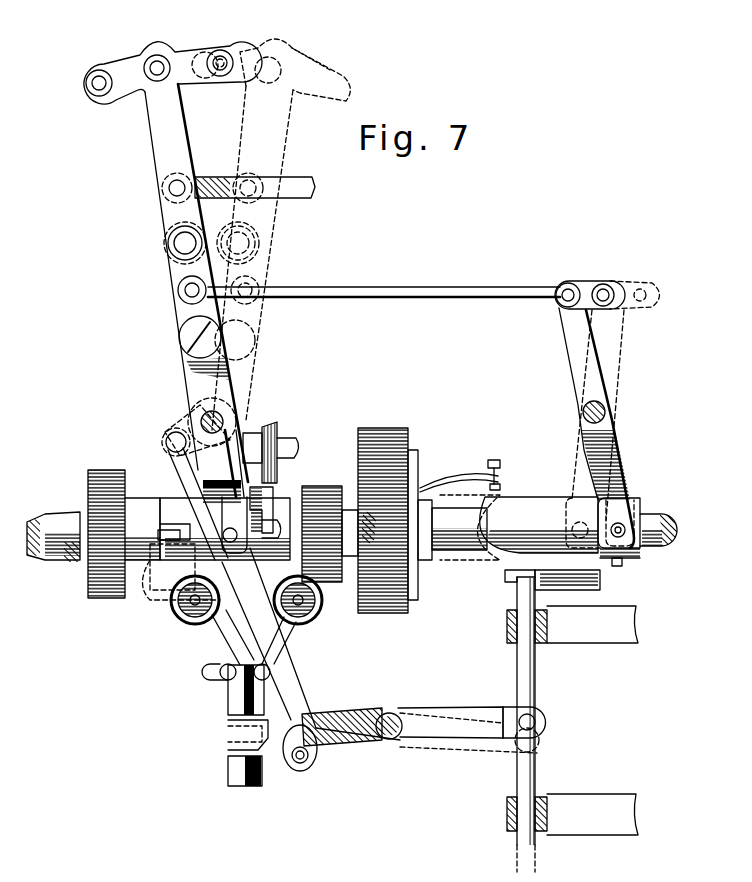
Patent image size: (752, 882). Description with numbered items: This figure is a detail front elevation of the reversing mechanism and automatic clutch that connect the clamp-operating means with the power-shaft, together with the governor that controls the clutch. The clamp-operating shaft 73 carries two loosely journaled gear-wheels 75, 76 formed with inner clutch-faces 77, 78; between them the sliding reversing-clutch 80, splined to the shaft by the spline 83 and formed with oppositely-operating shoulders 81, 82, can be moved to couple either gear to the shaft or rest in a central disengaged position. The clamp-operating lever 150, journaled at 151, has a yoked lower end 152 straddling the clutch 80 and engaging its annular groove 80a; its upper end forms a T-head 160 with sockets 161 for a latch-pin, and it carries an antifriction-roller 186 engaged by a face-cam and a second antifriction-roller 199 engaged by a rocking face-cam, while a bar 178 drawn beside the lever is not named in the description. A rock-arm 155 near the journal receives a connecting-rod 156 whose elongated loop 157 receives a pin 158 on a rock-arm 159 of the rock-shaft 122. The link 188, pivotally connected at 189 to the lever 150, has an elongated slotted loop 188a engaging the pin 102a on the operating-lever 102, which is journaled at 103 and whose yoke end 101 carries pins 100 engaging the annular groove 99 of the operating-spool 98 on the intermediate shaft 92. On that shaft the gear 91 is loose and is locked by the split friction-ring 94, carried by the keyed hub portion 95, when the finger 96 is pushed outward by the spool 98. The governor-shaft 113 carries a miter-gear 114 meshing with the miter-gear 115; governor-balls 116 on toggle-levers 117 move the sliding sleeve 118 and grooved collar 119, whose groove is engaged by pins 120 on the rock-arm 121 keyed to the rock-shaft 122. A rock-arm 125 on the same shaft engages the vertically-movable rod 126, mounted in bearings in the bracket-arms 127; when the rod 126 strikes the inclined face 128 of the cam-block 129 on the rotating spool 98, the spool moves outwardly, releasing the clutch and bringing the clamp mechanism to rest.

The clamp-operating lever 150 is at (161, 116).
The T-head 160 is at (126, 70).
The sockets 161 is at (220, 58).
The bar 178 is at (218, 194).
The antifriction-roller 199 is at (168, 243).
The pivotal connection 189 is at (186, 290).
The antifriction-roller 186 is at (181, 342).
The link 188 is at (330, 294).
The pin 102a is at (571, 292).
The elongated slotted loop 188a is at (605, 292).
The operating-lever 102 is at (596, 384).
The journal 103 is at (606, 410).
The crank 101 is at (618, 492).
The pins 100 is at (640, 552).
The intermediate shaft 92 is at (650, 526).
The annular groove 99 is at (617, 566).
The operating-spool 98 is at (535, 510).
The finger 96 is at (452, 486).
The hub portion 95 is at (420, 560).
The split friction-ring 94 is at (414, 466).
The gear 91 is at (378, 444).
The clamp-operating shaft 73 is at (56, 550).
The gear-wheel 75 is at (99, 486).
The clutch-face 77 is at (145, 504).
The spline 83 is at (165, 512).
The shoulder 81 is at (168, 562).
The annular groove 80a is at (178, 590).
The sliding reversing-clutch 80 is at (276, 496).
The clutch-face 78 is at (270, 520).
The shoulder 82 is at (272, 540).
The gear-wheel 76 is at (318, 494).
The journal 151 is at (225, 426).
The rock-arm 155 is at (168, 442).
The yoked lower end 152 is at (248, 446).
The miter-gear 114 is at (276, 437).
The miter-gear 115 is at (290, 452).
The governor-balls 116 is at (193, 616).
The governor-shaft 113 is at (183, 612).
The toggle-levers 117 is at (222, 642).
The connecting-rod 156 is at (276, 644).
The sliding sleeve 118 is at (228, 694).
The grooved collar 119 is at (228, 748).
The pins 120 is at (232, 752).
The elongated loop 157 is at (296, 762).
The pin 158 is at (306, 768).
The rock-arm 121 is at (328, 716).
The rock-shaft 122 is at (392, 712).
The rock-arm 125 is at (458, 734).
The rock-arm 159 is at (384, 742).
The vertically-movable rod 126 is at (534, 764).
The bracket-arms 127 is at (572, 624).
The cam-block 129 is at (567, 588).
The inclined face 128 is at (528, 572).